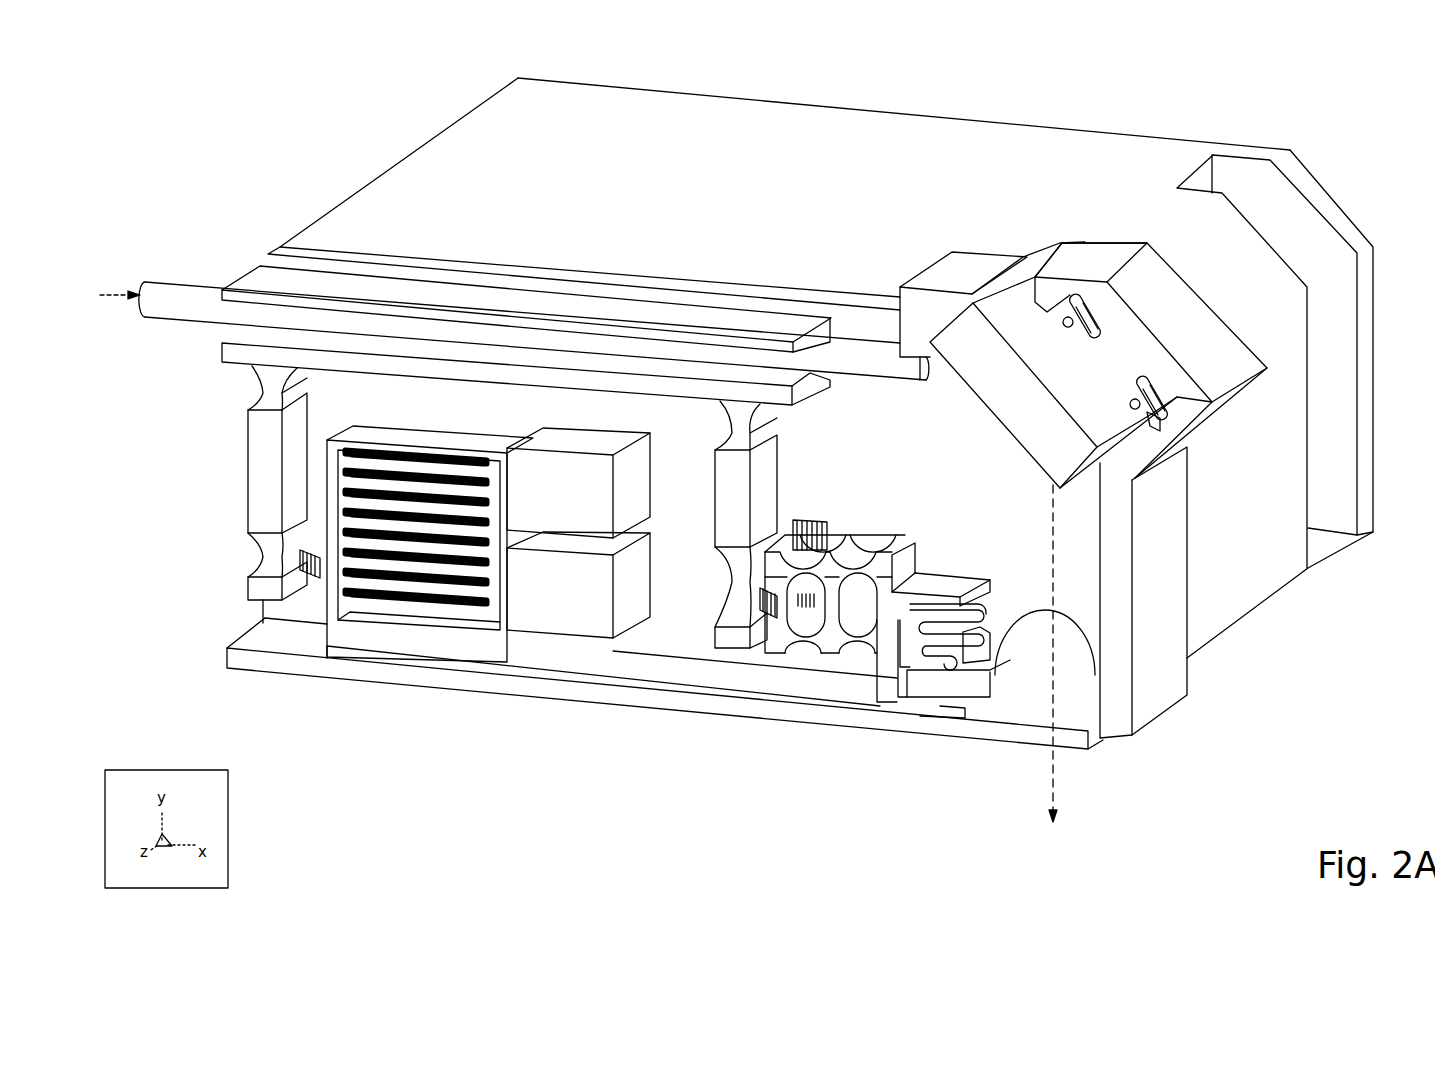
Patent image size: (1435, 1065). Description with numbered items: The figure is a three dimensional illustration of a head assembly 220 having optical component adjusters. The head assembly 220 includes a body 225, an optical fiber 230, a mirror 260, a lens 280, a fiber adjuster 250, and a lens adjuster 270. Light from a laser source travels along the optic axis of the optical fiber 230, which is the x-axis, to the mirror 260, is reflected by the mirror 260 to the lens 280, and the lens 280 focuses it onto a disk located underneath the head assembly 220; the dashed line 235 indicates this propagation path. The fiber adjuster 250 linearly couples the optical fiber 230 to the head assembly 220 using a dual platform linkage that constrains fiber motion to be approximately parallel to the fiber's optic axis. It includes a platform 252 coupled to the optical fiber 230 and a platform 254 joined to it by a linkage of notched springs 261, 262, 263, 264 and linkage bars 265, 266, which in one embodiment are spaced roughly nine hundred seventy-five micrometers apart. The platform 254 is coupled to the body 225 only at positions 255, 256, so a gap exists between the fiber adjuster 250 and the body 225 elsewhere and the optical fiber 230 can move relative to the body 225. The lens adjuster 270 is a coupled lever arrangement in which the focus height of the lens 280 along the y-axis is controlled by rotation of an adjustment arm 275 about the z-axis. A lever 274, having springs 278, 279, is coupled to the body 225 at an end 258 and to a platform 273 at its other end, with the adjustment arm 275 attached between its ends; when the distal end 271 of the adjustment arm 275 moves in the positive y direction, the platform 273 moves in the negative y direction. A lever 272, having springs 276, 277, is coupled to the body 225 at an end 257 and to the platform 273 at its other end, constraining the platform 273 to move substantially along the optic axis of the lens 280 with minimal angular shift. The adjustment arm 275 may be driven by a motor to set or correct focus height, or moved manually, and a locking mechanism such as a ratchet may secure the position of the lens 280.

The head assembly 220 is at (1046, 36).
The body 225 is at (805, 100).
The optical fiber 230 is at (176, 283).
The dashed line 235 is at (100, 290).
The fiber adjuster 250 is at (205, 483).
The platform 252 is at (222, 350).
The platform 254 is at (300, 565).
The position 255 is at (265, 620).
The position 256 is at (748, 593).
The end 257 is at (830, 528).
The end 258 is at (818, 603).
The mirror 260 is at (1047, 247).
The spring 261 is at (248, 385).
The spring 262 is at (248, 557).
The spring 263 is at (722, 423).
The spring 264 is at (725, 598).
The linkage bar 265 is at (248, 470).
The linkage bar 266 is at (715, 500).
The lens adjuster 270 is at (707, 641).
The distal end 271 is at (333, 645).
The lever 272 is at (790, 545).
The platform 273 is at (890, 680).
The lever 274 is at (850, 640).
The adjustment arm 275 is at (568, 662).
The spring 276 is at (832, 550).
The spring 277 is at (871, 541).
The spring 278 is at (803, 648).
The spring 279 is at (857, 658).
The lens 280 is at (1017, 683).